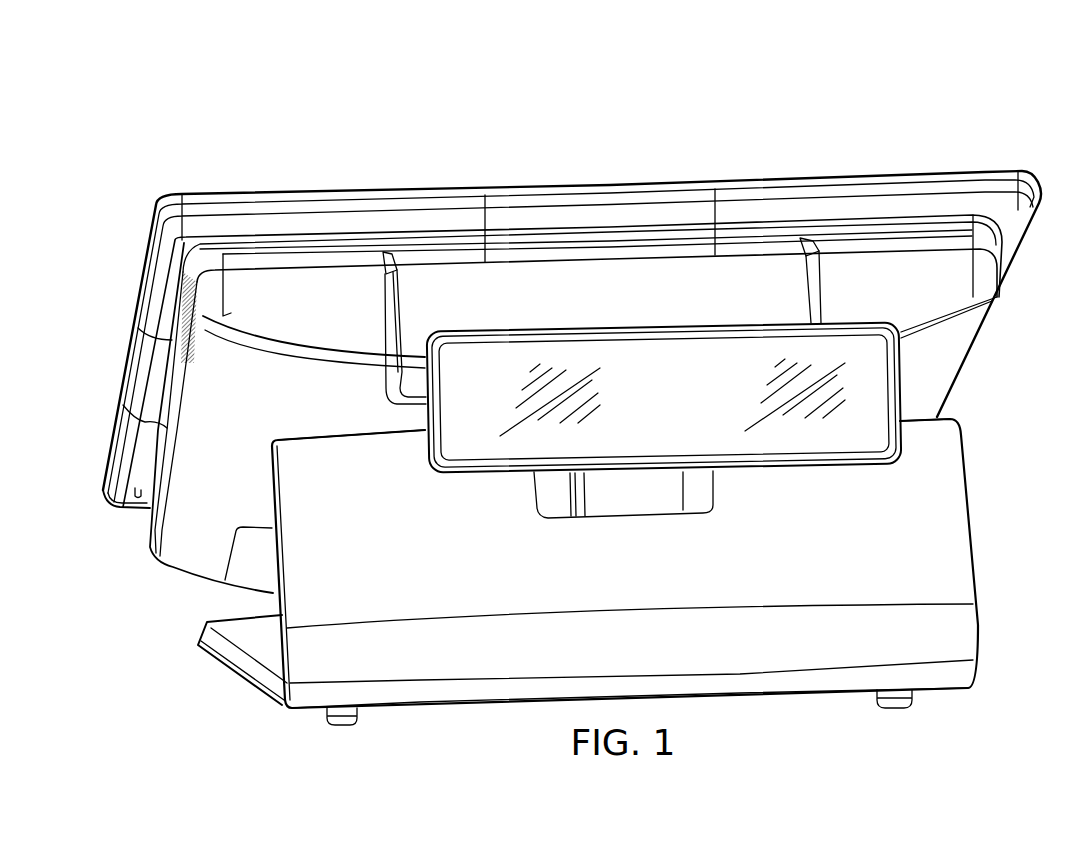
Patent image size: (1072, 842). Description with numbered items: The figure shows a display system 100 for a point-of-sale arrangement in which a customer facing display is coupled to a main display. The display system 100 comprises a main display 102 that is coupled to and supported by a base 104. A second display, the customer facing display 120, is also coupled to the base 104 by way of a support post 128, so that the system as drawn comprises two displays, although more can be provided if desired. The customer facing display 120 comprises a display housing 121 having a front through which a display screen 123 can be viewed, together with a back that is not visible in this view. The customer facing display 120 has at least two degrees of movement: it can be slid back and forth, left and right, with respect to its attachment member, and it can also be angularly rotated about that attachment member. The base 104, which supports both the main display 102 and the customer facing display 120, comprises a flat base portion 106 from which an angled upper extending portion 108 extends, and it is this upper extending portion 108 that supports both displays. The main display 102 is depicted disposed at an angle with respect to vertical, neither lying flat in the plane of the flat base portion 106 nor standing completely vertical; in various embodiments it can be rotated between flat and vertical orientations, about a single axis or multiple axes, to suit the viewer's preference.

The display system 100 is at (262, 104).
The main display 102 is at (834, 170).
The base 104 is at (982, 582).
The flat base portion 106 is at (232, 664).
The upper extending portion 108 is at (300, 462).
The customer facing display 120 is at (861, 314).
The display housing 121 is at (843, 470).
The display screen 123 is at (646, 413).
The support post 128 is at (643, 508).